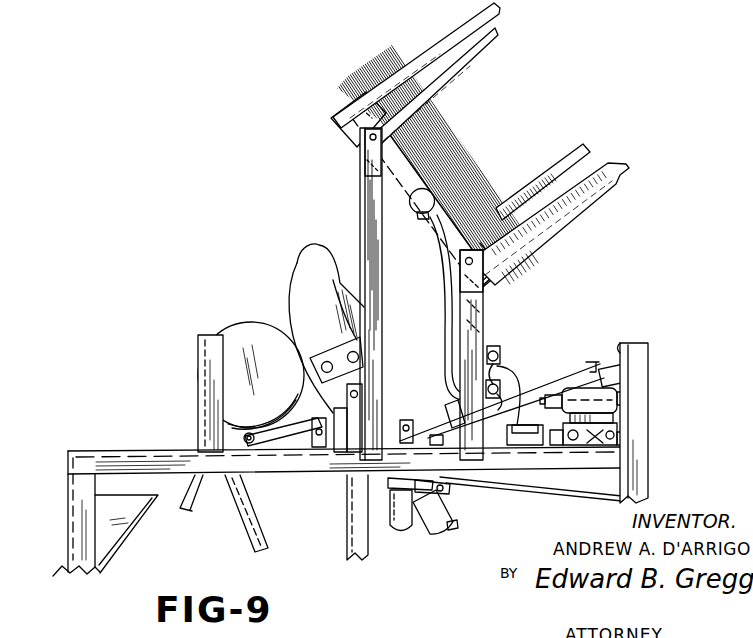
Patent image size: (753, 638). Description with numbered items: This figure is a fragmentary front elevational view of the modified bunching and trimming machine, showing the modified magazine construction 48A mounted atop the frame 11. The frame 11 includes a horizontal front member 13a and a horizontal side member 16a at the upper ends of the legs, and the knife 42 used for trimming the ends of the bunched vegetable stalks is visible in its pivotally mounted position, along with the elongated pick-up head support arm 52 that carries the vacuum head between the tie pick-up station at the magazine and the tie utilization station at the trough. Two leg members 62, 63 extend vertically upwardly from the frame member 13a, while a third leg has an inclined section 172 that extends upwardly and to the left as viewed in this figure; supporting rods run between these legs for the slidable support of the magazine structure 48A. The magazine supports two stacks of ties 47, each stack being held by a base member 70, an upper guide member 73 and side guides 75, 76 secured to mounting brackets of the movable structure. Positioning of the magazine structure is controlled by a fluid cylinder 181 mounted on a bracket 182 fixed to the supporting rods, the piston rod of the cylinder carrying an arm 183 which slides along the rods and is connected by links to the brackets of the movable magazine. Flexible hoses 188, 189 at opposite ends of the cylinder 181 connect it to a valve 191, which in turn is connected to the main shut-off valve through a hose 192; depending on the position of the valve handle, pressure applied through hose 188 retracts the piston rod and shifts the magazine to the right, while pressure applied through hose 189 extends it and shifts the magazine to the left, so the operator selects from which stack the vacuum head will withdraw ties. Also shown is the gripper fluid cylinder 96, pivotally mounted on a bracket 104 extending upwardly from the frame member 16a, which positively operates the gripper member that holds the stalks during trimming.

The frame 11 is at (67, 498).
The horizontal front member 13a is at (108, 450).
The horizontal side member 16a is at (643, 460).
The knife 42 is at (300, 270).
The ties 47 is at (362, 72).
The modified magazine construction 48A is at (519, 100).
The pick-up head support arm 52 is at (523, 494).
The leg member 62 is at (362, 204).
The leg member 63 is at (483, 313).
The base member 70 is at (598, 186).
The upper guide member 73 is at (463, 26).
The side guide 75 is at (497, 33).
The side guide 76 is at (578, 142).
The fluid cylinder 96 is at (572, 370).
The bracket 104 is at (648, 402).
The inclined section 172 is at (382, 163).
The fluid cylinder 181 is at (422, 210).
The bracket 182 is at (408, 170).
The arm 183 is at (338, 122).
The flexible hose 188 is at (445, 303).
The flexible hose 189 is at (450, 338).
The valve 191 is at (496, 349).
The hose 192 is at (508, 395).